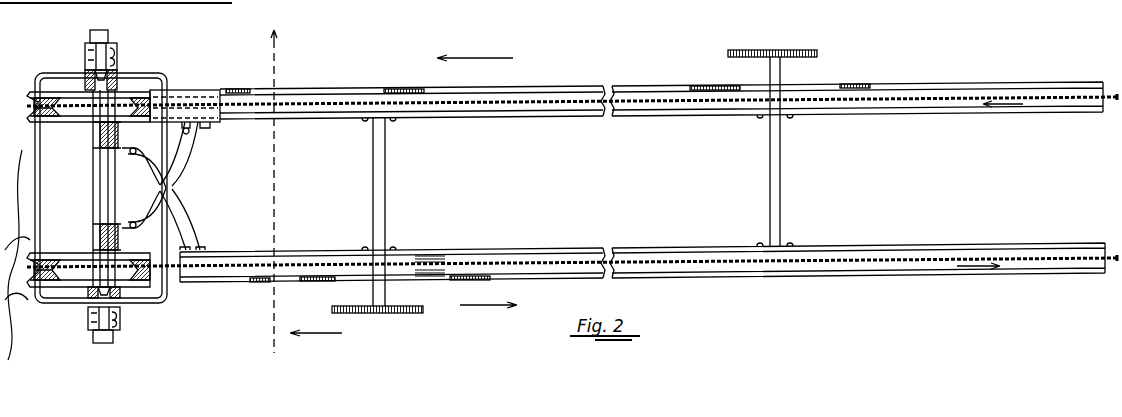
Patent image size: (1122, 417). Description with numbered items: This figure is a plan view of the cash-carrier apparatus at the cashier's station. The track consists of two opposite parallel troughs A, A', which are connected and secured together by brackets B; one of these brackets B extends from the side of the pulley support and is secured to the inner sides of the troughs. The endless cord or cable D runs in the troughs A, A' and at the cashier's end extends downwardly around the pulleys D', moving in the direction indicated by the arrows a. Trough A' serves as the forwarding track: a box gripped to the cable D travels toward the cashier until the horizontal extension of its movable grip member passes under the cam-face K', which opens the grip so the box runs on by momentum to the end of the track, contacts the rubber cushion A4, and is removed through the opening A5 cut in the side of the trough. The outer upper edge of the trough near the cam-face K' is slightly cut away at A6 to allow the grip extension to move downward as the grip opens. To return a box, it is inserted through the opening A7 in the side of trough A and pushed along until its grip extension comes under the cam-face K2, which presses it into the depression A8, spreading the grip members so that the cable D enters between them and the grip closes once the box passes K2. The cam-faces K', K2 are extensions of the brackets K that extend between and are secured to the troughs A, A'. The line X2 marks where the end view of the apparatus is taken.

The trough A is at (857, 255).
The trough A' is at (856, 92).
The rubber cushion A4 is at (193, 92).
The opening A5 is at (236, 91).
The cut-away edge A6 is at (715, 79).
The opening A7 is at (230, 284).
The depression A8 is at (412, 280).
The bracket B is at (163, 186).
The endless cord or cable D is at (289, 189).
The pulley D' is at (101, 186).
The bracket K is at (572, 181).
The cam-face K' is at (772, 45).
The cam-face K2 is at (378, 319).
The arrow a is at (572, 184).
The section line X2 is at (275, 199).